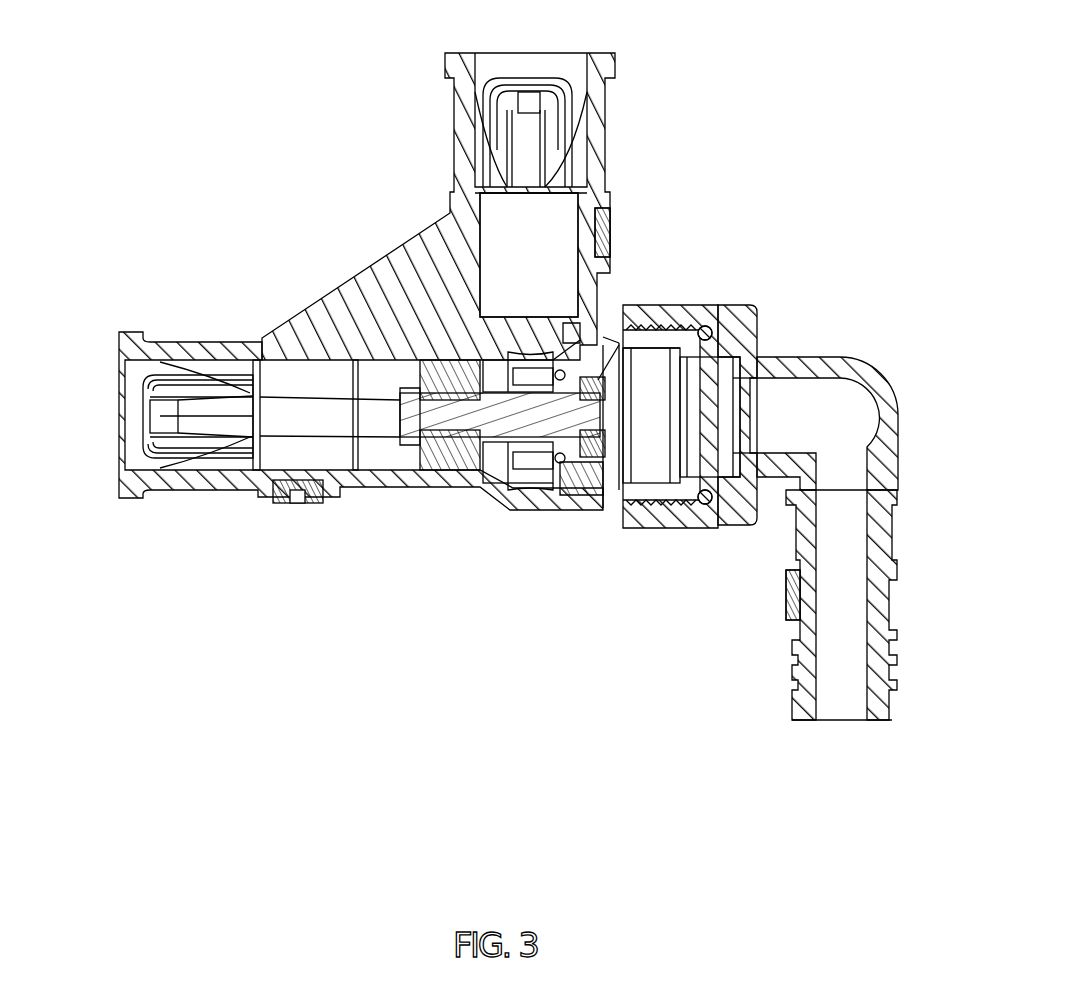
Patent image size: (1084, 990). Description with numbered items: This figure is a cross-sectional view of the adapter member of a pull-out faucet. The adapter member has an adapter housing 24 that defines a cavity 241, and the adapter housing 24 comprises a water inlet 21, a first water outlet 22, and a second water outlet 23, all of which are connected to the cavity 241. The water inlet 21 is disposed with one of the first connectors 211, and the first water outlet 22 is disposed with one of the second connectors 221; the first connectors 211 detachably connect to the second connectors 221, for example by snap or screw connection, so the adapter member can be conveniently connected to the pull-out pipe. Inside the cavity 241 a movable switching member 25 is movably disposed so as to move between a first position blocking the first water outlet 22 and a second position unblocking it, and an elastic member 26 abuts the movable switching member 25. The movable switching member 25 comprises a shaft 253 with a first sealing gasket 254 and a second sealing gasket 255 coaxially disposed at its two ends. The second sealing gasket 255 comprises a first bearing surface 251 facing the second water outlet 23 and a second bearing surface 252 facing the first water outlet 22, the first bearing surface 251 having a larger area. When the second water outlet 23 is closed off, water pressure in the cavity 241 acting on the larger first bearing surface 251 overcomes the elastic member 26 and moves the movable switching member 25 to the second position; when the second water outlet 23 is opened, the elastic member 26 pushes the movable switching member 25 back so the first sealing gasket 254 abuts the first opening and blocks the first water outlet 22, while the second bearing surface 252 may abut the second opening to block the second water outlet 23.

The water inlet 21 is at (535, 250).
The first connector 211 is at (542, 102).
The first water outlet 22 is at (325, 432).
The second connector 221 is at (797, 677).
The second water outlet 23 is at (155, 368).
The adapter housing 24 is at (413, 260).
The cavity 241 is at (535, 423).
The movable switching member 25 is at (150, 410).
The first bearing surface 251 is at (353, 388).
The second bearing surface 252 is at (458, 482).
The shaft 253 is at (530, 490).
The first sealing gasket 254 is at (598, 488).
The second sealing gasket 255 is at (430, 370).
The elastic member 26 is at (597, 318).